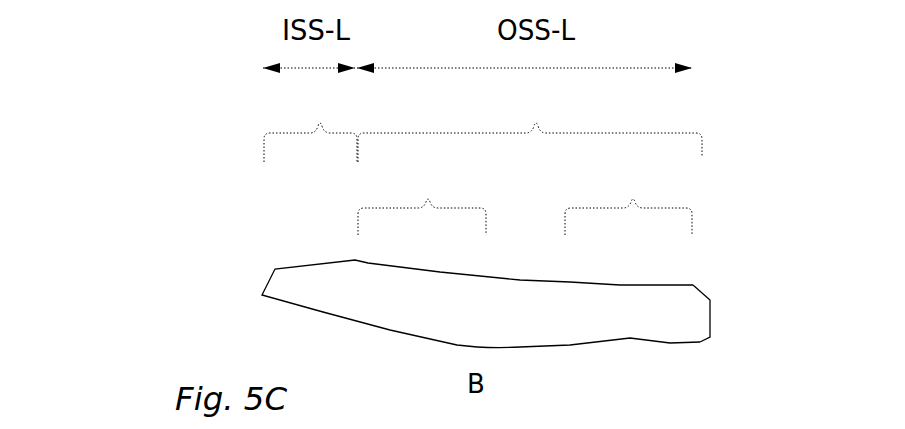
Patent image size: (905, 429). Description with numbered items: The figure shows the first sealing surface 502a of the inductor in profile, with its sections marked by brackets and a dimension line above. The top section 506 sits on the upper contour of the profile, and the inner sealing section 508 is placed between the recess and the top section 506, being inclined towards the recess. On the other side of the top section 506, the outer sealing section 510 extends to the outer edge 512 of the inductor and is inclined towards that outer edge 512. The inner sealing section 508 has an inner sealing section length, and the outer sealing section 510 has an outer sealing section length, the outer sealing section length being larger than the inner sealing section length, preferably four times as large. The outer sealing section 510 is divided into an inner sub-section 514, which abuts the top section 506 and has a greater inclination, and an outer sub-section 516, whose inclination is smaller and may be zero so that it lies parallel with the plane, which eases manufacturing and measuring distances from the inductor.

The first sealing surface 502a is at (116, 235).
The top section 506 is at (347, 261).
The inner sealing section 508 is at (310, 122).
The outer sealing section 510 is at (530, 122).
The outer edge 512 is at (695, 285).
The inner sub-section 514 is at (422, 200).
The outer sub-section 516 is at (628, 200).